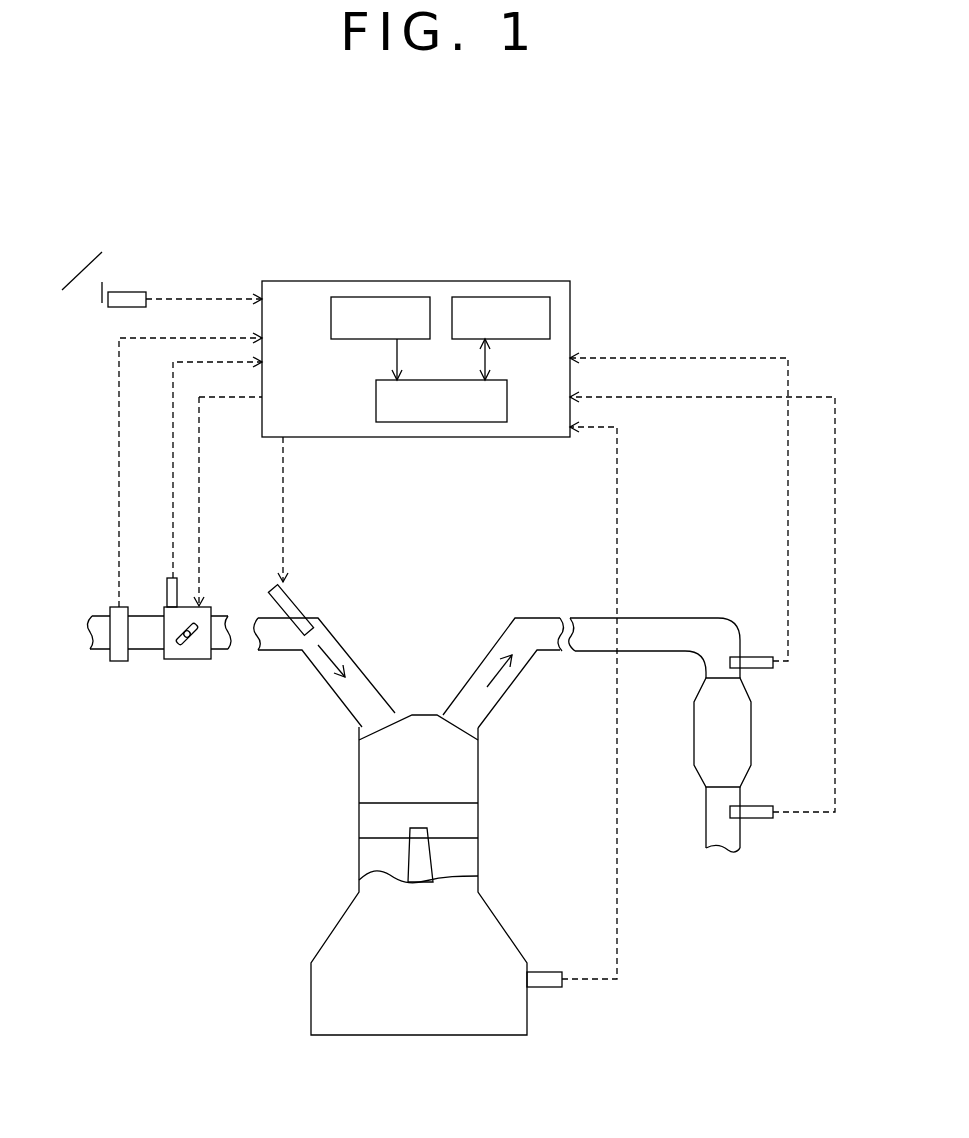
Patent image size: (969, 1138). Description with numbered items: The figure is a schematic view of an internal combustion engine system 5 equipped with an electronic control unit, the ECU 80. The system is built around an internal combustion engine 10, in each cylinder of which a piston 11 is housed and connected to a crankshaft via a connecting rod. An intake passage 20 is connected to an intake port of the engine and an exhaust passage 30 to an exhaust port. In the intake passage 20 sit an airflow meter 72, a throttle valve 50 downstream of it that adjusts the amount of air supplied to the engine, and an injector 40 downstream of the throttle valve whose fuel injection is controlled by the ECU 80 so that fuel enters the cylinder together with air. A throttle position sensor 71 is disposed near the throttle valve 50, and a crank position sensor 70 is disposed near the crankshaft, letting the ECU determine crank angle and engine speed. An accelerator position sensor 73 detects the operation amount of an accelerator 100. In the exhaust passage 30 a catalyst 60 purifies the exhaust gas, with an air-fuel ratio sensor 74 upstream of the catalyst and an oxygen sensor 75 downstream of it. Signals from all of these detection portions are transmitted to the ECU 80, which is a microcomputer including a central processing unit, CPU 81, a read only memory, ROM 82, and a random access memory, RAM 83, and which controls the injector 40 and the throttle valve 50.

The internal combustion engine system 5 is at (781, 207).
The internal combustion engine 10 is at (359, 778).
The piston 11 is at (382, 842).
The intake passage 20 is at (330, 690).
The exhaust passage 30 is at (503, 703).
The injector 40 is at (300, 600).
The throttle valve 50 is at (184, 659).
The catalyst 60 is at (694, 727).
The crank position sensor 70 is at (542, 987).
The throttle position sensor 71 is at (167, 590).
The airflow meter 72 is at (110, 608).
The accelerator position sensor 73 is at (127, 292).
The air-fuel ratio sensor 74 is at (760, 657).
The oxygen sensor 75 is at (757, 818).
The electronic control unit 80 is at (292, 281).
The central processing unit 81 is at (437, 437).
The read only memory 82 is at (378, 297).
The random access memory 83 is at (498, 297).
The accelerator 100 is at (102, 282).